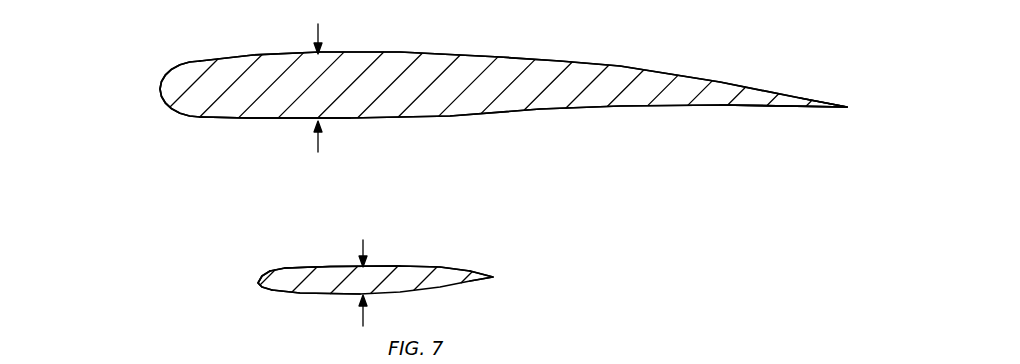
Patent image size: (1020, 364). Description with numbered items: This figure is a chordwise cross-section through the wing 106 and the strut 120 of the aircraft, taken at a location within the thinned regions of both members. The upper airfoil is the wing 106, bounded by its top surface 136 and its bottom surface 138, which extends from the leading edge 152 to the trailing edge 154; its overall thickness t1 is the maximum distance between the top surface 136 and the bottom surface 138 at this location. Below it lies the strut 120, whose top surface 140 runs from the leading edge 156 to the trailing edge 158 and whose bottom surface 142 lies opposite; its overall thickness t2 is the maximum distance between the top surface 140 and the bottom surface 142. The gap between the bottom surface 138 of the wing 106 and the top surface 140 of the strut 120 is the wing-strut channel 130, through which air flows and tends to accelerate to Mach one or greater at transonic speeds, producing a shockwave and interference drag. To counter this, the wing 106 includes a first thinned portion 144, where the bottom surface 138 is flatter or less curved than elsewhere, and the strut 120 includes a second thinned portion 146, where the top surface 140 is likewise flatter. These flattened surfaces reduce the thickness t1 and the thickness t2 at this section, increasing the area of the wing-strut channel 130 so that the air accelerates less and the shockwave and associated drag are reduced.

The wing 106 is at (200, 58).
The strut 120 is at (478, 298).
The wing-strut channel 130 is at (270, 190).
The top surface 136 is at (562, 60).
The bottom surface 138 is at (520, 113).
The top surface 140 is at (322, 268).
The bottom surface 142 is at (288, 293).
The first thinned portion 144 is at (252, 125).
The second thinned portion 146 is at (412, 256).
The leading edge 152 is at (160, 93).
The trailing edge 154 is at (847, 107).
The leading edge 156 is at (258, 283).
The trailing edge 158 is at (493, 277).
The overall thickness t1 is at (318, 28).
The overall thickness t2 is at (363, 312).